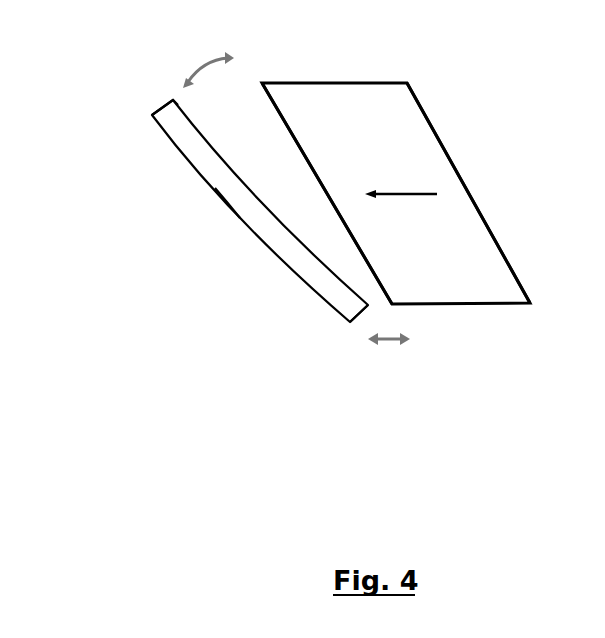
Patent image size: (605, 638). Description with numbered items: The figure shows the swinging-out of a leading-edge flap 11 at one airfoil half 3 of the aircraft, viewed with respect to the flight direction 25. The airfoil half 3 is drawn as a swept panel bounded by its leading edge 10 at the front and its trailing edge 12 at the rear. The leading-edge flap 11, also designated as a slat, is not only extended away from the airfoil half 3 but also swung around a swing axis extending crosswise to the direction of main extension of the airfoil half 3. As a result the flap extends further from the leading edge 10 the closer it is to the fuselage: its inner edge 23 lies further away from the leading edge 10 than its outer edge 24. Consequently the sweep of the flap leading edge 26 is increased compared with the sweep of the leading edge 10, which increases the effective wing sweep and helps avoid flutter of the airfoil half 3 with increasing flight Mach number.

The airfoil half 3 is at (400, 110).
The leading edge 10 is at (343, 218).
The leading-edge flap 11 is at (215, 188).
The trailing edge 12 is at (488, 223).
The inner edge 23 is at (158, 101).
The outer edge 24 is at (355, 322).
The flight direction 25 is at (413, 193).
The flap leading edge 26 is at (240, 218).